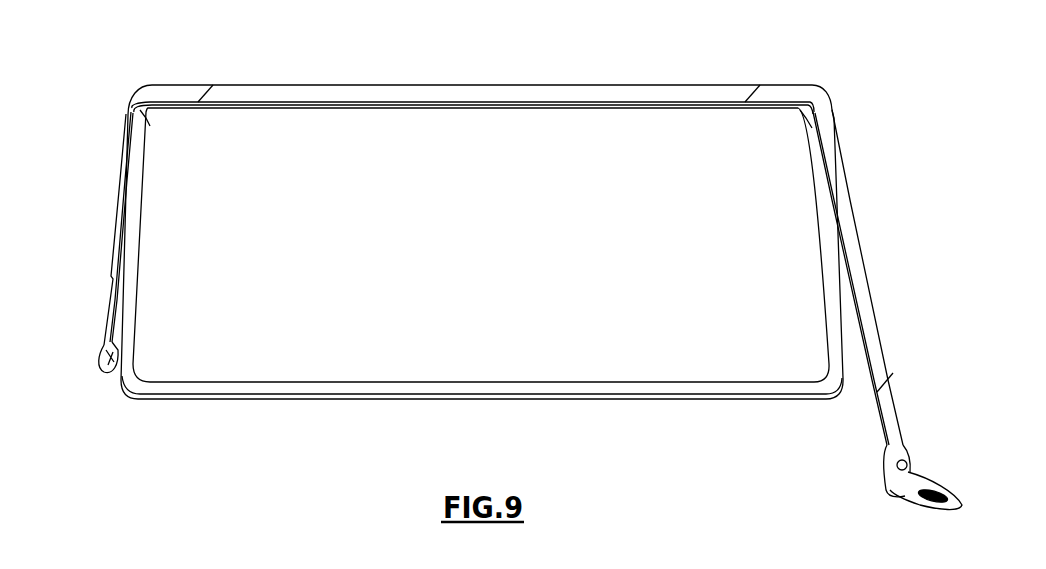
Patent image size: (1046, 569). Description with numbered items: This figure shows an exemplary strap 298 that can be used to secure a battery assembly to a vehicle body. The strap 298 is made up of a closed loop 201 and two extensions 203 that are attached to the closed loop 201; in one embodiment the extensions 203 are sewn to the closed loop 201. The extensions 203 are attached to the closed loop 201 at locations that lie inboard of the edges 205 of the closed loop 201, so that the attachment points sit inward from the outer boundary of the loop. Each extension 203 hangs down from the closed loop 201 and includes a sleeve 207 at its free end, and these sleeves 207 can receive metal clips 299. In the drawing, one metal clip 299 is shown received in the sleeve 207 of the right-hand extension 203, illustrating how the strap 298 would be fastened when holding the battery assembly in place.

The strap 298 is at (642, 68).
The closed loop 201 is at (465, 388).
The extensions 203 is at (118, 178).
The edges 205 is at (143, 112).
The sleeves 207 is at (112, 372).
The metal clips 299 is at (913, 493).